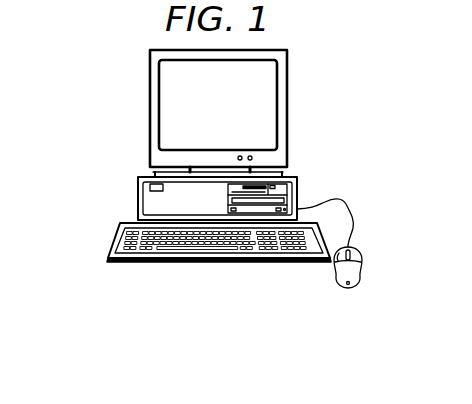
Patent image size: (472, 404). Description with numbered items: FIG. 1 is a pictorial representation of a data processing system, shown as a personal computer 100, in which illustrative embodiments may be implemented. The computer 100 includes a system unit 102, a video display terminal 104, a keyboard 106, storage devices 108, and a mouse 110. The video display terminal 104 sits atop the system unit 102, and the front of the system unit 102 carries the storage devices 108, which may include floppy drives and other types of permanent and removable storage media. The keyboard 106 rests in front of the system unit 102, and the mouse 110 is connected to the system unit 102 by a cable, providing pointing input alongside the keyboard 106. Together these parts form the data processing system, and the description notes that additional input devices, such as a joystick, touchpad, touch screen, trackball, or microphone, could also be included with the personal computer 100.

The computer 100 is at (86, 91).
The system unit 102 is at (138, 197).
The video display terminal 104 is at (285, 108).
The keyboard 106 is at (215, 262).
The storage devices 108 is at (288, 190).
The mouse 110 is at (362, 270).